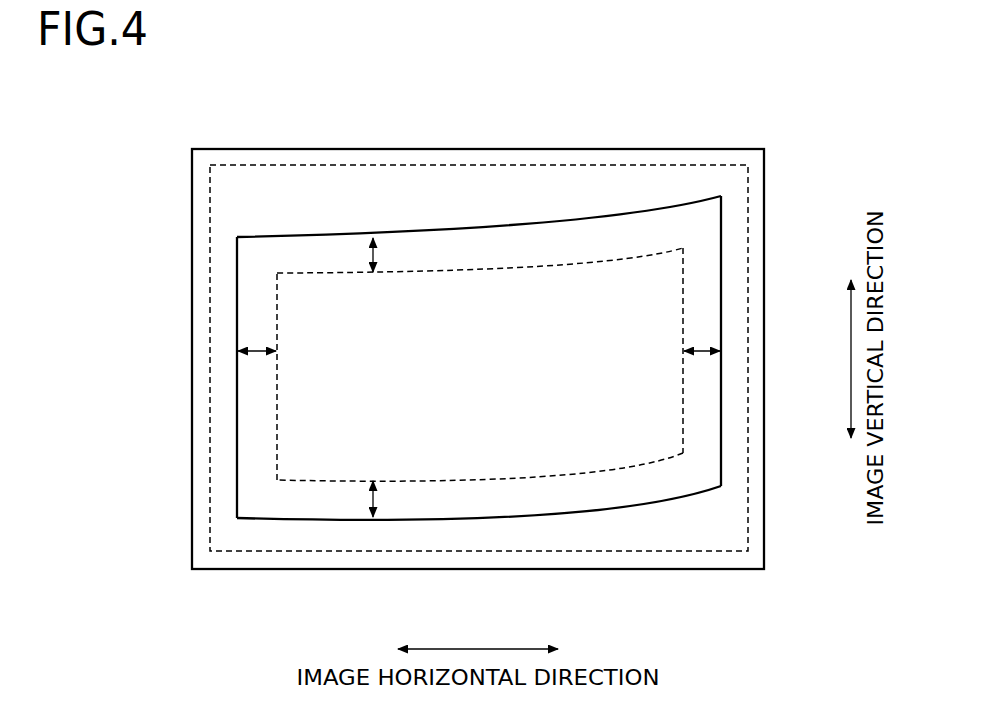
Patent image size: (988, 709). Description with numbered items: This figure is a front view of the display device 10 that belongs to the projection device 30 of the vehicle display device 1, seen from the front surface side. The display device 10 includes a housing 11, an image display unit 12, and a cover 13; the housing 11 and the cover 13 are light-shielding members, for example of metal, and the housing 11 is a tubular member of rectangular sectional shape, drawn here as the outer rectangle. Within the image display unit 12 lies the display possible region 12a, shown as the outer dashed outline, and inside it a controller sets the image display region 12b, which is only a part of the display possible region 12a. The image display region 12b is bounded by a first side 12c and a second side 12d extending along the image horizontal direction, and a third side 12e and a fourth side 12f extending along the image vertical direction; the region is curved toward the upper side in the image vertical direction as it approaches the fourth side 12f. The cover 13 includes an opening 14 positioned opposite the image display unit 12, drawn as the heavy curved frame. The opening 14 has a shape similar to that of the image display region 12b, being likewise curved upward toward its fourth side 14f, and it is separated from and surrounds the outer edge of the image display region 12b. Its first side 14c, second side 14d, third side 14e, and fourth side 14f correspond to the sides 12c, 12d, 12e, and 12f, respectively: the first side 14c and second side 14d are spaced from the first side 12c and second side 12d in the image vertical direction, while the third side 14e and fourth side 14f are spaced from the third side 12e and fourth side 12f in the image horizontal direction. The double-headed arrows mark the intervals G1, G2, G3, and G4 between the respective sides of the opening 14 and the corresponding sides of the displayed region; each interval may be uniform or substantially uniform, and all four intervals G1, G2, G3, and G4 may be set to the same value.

The vehicle display device 1 is at (257, 70).
The projection device 30 is at (335, 90).
The display device 10 is at (302, 140).
The housing 11 is at (570, 148).
The cover 13 is at (628, 177).
The image display unit 12 is at (603, 241).
The display possible region 12a is at (393, 165).
The image display region 12b is at (530, 262).
The first side 12c is at (422, 272).
The second side 12d is at (440, 481).
The third side 12e is at (276, 367).
The fourth side 12f is at (684, 364).
The opening 14 is at (674, 208).
The first side 14c is at (484, 232).
The second side 14d is at (490, 517).
The third side 14e is at (240, 386).
The fourth side 14f is at (718, 385).
The interval G1 is at (373, 237).
The interval G2 is at (375, 520).
The interval G3 is at (257, 350).
The interval G4 is at (697, 350).